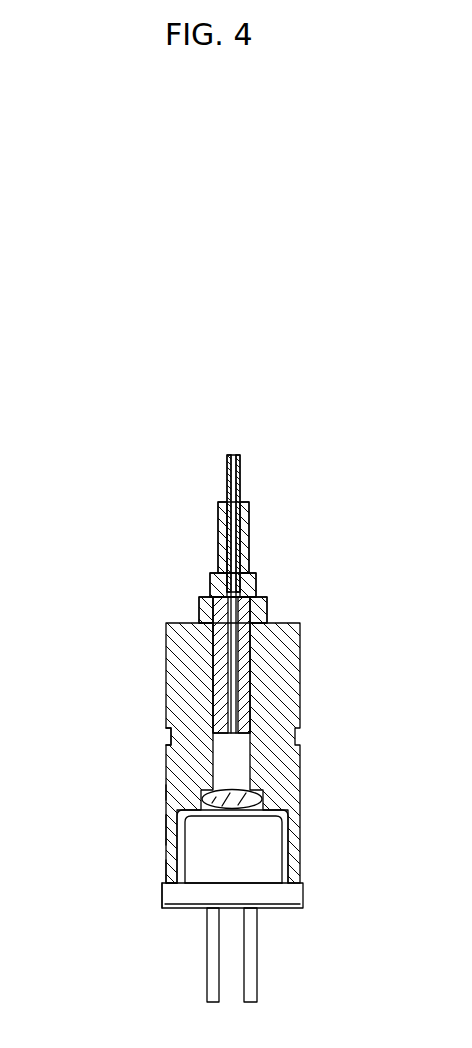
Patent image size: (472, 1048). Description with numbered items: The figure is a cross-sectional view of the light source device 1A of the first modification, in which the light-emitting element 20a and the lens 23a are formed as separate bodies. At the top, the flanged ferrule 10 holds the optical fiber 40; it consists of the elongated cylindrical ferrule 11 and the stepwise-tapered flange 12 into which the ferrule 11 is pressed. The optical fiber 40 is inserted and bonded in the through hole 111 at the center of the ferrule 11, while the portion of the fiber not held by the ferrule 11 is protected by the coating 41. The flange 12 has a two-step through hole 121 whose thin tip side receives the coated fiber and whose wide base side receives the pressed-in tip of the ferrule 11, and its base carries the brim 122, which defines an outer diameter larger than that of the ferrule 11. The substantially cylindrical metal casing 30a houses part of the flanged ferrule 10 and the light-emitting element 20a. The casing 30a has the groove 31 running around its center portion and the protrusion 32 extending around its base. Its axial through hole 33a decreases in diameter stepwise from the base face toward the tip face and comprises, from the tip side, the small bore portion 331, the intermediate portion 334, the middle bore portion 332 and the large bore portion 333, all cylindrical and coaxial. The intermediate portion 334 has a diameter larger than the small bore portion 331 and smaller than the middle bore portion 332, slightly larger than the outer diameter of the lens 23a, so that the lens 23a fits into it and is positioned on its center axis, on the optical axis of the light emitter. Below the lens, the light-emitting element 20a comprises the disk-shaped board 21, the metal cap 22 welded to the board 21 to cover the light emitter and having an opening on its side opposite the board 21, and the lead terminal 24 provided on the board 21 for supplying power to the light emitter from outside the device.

The light source device 1A is at (308, 383).
The flanged ferrule 10 is at (113, 510).
The ferrule 11 is at (199, 610).
The flange 12 is at (218, 528).
The through hole 121 is at (258, 597).
The brim 122 is at (260, 612).
The coating 41 is at (240, 483).
The optical fiber 40 is at (250, 670).
The through hole 111 is at (236, 695).
The casing 30a is at (158, 699).
The groove 31 is at (170, 740).
The through hole 33a is at (70, 747).
The small bore portion 331 is at (166, 748).
The intermediate portion 334 is at (165, 793).
The middle bore portion 332 is at (165, 832).
The large bore portion 333 is at (160, 880).
The protrusion 32 is at (159, 896).
The lens 23a is at (263, 789).
The light-emitting element 20a is at (280, 814).
The cap 22 is at (267, 867).
The board 21 is at (303, 898).
The lead terminal 24 is at (207, 980).